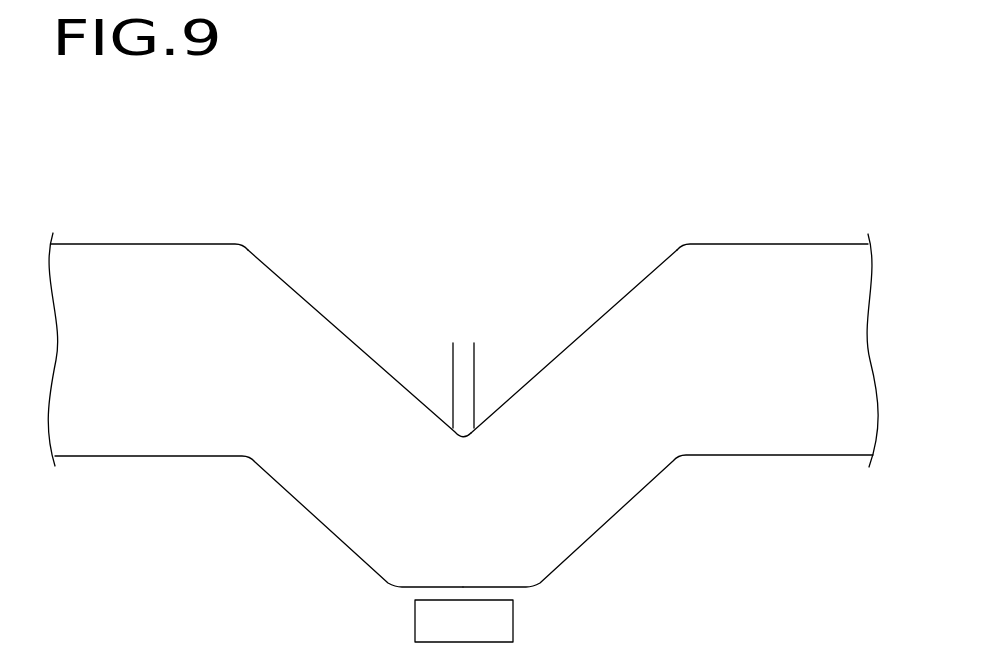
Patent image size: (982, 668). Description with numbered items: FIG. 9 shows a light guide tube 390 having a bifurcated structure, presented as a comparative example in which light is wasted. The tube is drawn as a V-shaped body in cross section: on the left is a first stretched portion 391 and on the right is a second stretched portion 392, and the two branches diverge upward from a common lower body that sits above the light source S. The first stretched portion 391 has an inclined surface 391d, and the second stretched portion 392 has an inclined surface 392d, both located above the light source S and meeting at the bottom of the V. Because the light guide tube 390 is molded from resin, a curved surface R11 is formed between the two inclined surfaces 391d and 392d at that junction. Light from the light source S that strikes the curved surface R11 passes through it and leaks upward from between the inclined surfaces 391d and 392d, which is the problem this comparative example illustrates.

The light guide tube 390 is at (463, 354).
The first stretched portion 391 is at (167, 265).
The second stretched portion 392 is at (763, 265).
The inclined surface 391d is at (346, 337).
The inclined surface 392d is at (582, 336).
The curved surface R11 is at (480, 340).
The light source S is at (492, 617).